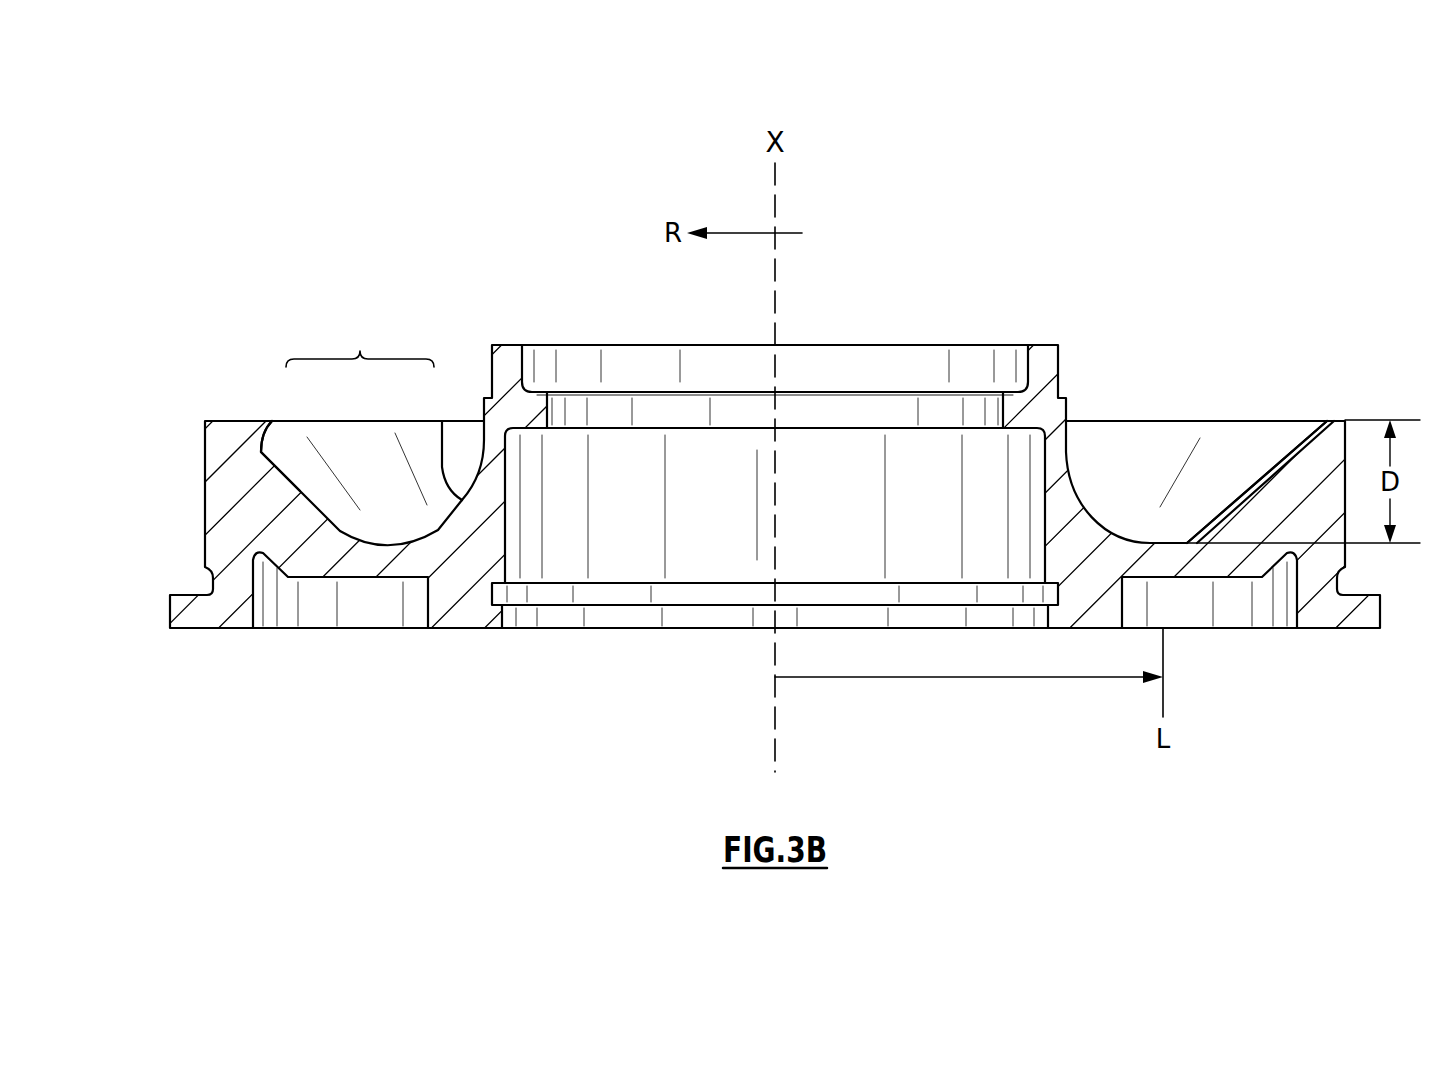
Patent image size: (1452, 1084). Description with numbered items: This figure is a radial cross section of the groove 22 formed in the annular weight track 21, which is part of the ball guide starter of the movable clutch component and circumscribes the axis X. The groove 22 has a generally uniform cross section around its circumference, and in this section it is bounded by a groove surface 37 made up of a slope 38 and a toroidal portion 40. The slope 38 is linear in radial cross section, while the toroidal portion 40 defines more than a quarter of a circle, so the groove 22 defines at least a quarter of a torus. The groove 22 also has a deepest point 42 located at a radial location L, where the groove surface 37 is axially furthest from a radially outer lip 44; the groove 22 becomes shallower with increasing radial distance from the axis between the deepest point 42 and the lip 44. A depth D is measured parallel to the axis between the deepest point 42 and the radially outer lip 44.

The annular weight track 21 is at (205, 463).
The groove 22 is at (384, 473).
The groove surface 37 is at (360, 344).
The slope 38 is at (274, 421).
The toroidal portion 40 is at (442, 421).
The deepest point 42 is at (1150, 543).
The radially outer lip 44 is at (1340, 420).